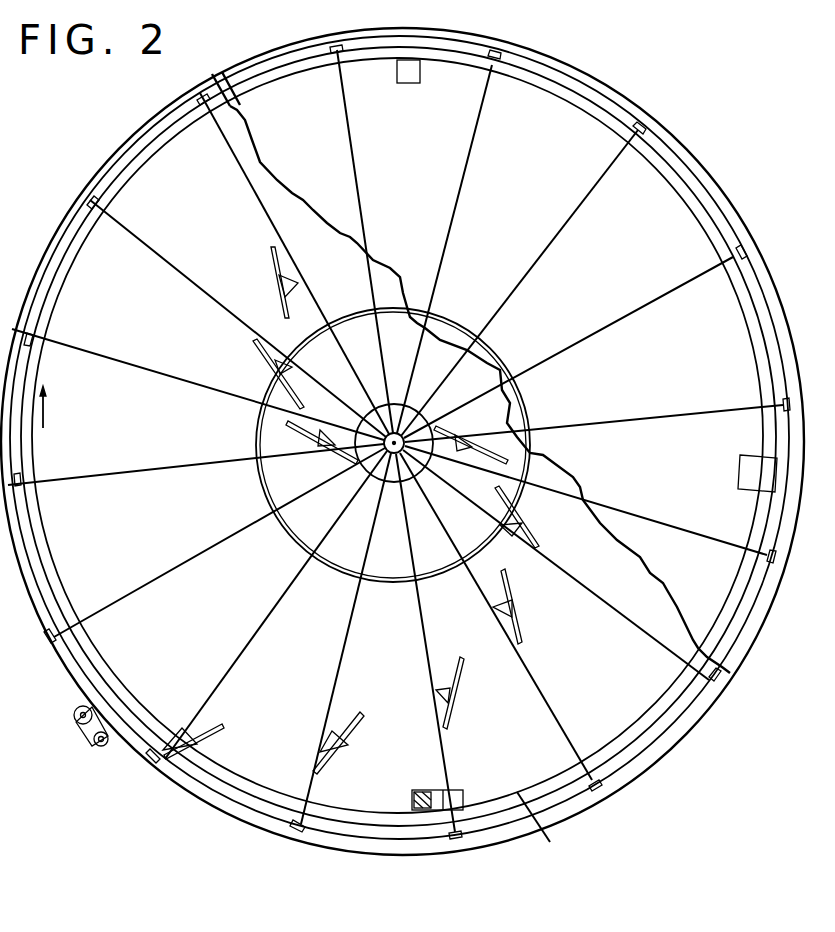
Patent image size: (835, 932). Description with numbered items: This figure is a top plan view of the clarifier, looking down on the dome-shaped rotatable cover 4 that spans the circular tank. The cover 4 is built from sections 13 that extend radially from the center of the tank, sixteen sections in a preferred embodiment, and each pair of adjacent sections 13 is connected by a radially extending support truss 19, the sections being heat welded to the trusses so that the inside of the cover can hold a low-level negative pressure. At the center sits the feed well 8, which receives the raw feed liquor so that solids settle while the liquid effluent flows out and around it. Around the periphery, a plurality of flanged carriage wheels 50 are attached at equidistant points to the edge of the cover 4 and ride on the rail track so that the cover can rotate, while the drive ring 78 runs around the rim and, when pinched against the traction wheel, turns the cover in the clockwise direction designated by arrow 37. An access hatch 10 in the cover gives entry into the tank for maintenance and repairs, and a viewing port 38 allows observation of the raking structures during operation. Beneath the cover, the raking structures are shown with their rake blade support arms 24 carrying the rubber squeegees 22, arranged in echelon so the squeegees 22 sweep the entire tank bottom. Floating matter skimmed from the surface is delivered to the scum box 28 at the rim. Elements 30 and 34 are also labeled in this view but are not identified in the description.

The rotatable cover 4 is at (348, 240).
The feed well 8 is at (258, 483).
The access hatch 10 is at (752, 462).
The sections 13 is at (516, 236).
The support trusses 19 is at (465, 180).
The rubber squeegee 22 is at (272, 262).
The rake blade support arms 24 is at (192, 726).
The scum box 28 is at (424, 790).
The rim joint line 30 is at (549, 827).
The roller assembly 34 is at (96, 741).
The arrow 37 is at (46, 413).
The viewing port 38 is at (405, 85).
The flanged carriage wheels 50 is at (197, 92).
The drive ring 78 is at (562, 66).